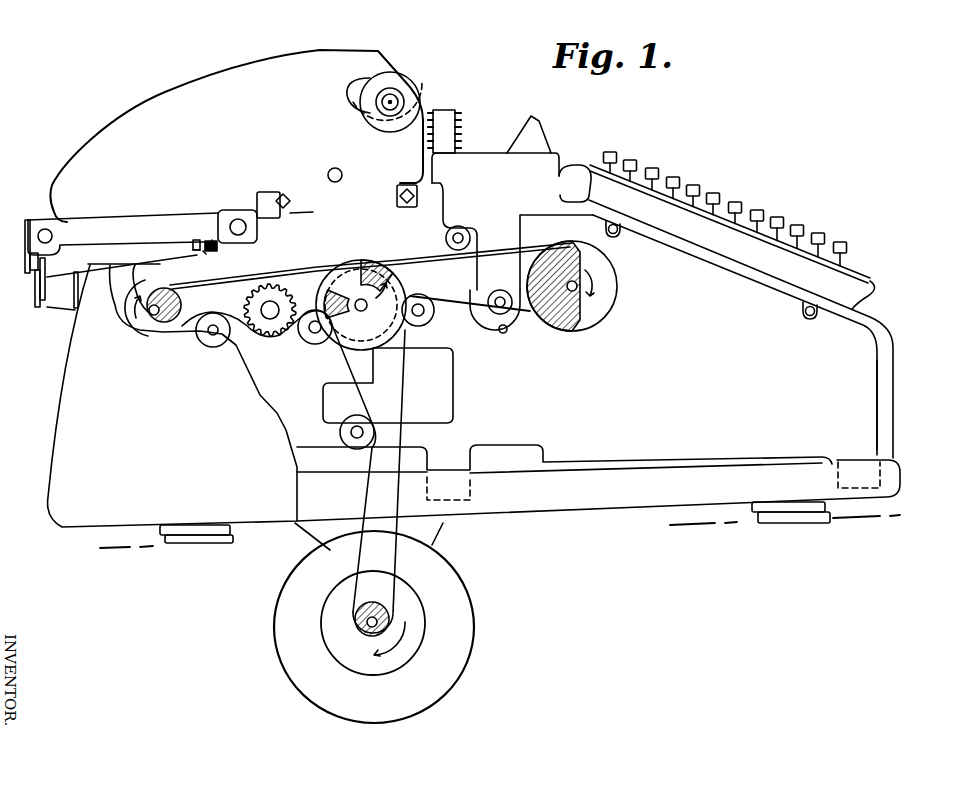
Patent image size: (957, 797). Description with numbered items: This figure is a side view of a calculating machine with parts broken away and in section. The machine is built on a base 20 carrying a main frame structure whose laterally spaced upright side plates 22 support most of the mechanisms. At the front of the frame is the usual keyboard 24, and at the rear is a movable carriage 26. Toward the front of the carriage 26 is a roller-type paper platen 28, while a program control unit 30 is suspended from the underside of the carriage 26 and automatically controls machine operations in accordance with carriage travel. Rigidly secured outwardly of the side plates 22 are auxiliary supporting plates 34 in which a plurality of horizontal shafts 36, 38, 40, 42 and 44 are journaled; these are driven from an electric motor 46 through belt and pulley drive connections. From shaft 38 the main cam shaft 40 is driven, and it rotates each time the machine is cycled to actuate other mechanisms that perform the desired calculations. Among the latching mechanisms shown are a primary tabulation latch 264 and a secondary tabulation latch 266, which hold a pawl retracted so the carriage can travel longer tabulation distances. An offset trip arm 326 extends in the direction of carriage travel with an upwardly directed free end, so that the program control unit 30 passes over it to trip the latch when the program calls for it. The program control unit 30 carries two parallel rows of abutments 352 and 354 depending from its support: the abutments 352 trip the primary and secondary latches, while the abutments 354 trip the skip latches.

The base 20 is at (653, 502).
The side plates 22 is at (890, 353).
The keyboard 24 is at (713, 190).
The carriage 26 is at (243, 68).
The paper platen 28 is at (413, 82).
The program control unit 30 is at (140, 230).
The auxiliary supporting plates 34 is at (867, 390).
The shaft 36 is at (360, 302).
The shaft 38 is at (614, 304).
The main cam shaft 40 is at (500, 291).
The shaft 42 is at (273, 320).
The shaft 44 is at (153, 317).
The electric motor 46 is at (460, 632).
The primary tabulation latch 264 is at (219, 248).
The secondary tabulation latch 266 is at (205, 253).
The offset trip arm 326 is at (193, 249).
The abutments 352 is at (213, 240).
The abutments 354 is at (196, 239).